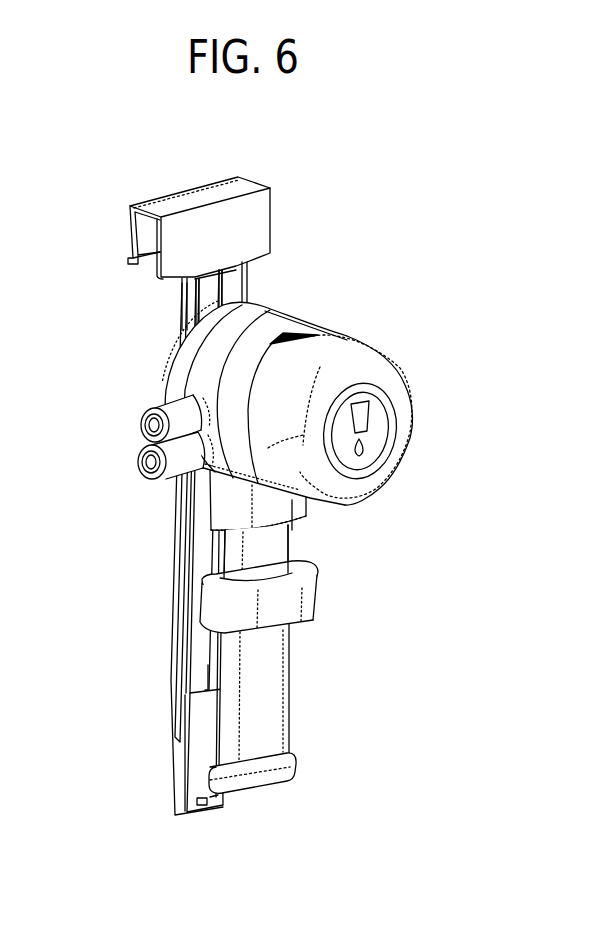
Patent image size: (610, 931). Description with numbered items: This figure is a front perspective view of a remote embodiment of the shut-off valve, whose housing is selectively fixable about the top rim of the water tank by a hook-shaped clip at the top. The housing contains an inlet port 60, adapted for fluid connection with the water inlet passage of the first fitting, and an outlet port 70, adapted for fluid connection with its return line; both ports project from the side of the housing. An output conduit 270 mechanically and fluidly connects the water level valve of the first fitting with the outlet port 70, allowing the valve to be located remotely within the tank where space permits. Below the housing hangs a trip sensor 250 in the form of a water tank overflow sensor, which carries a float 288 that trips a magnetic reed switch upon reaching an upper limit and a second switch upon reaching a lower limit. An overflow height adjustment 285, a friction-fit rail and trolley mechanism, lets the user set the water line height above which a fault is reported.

The trip sensor 250 is at (333, 591).
The overflow height adjustment 285 is at (245, 282).
The output conduit 270 is at (385, 375).
The outlet port 70 is at (153, 424).
The inlet port 60 is at (148, 470).
The float 288 is at (275, 613).